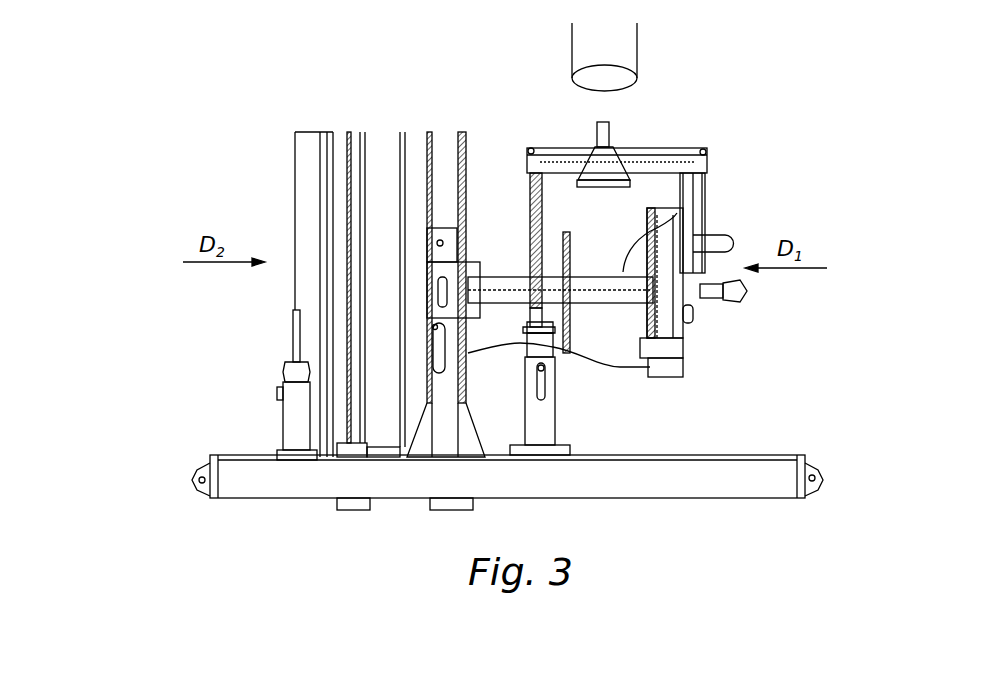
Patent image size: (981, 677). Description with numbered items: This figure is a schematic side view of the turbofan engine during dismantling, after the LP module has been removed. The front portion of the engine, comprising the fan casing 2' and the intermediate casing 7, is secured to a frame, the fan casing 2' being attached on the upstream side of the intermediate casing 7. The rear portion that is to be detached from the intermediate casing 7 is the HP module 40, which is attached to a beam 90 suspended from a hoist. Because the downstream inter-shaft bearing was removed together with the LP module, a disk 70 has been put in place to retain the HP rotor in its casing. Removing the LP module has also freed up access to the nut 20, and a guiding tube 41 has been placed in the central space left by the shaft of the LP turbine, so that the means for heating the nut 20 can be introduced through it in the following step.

The fan casing 2' is at (350, 263).
The intermediate casing 7 is at (445, 167).
The beam 90 is at (663, 165).
The guiding tube 41 is at (467, 232).
The disk 70 is at (693, 315).
The HP module 40 is at (613, 335).
The nut 20 is at (443, 303).